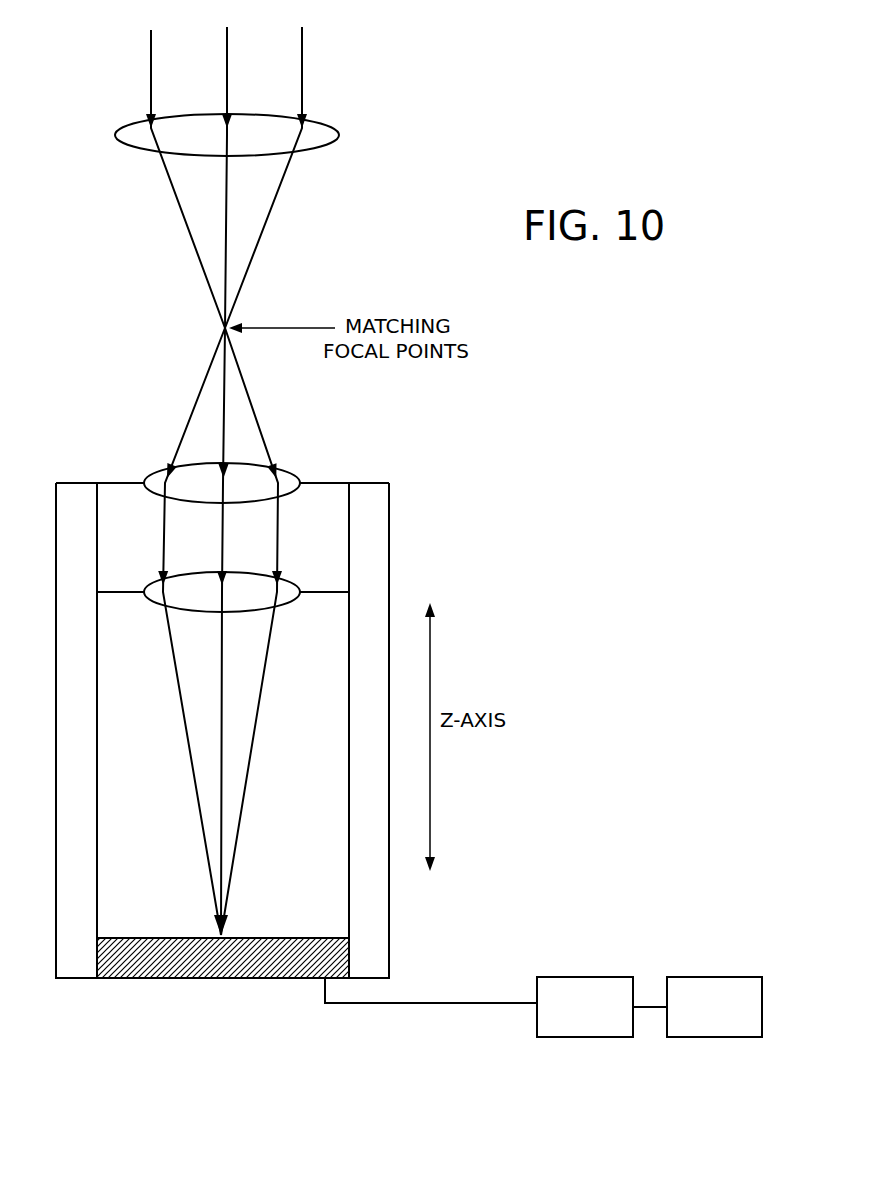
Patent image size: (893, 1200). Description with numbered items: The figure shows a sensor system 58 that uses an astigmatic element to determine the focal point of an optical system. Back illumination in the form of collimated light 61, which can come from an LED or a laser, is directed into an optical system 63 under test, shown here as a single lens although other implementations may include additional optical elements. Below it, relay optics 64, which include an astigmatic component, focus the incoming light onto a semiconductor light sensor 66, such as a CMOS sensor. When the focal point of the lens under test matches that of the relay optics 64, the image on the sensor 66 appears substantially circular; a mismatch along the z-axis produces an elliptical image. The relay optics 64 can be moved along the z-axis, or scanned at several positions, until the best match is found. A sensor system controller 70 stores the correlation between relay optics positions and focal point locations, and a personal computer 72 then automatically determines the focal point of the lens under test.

The sensor system 58 is at (576, 117).
The collimated light 61 is at (308, 52).
The optical system under test 63 is at (343, 135).
The relay optics 64 is at (353, 537).
The semiconductor light sensor 66 is at (352, 962).
The sensor system controller 70 is at (585, 1007).
The personal computer 72 is at (714, 1007).